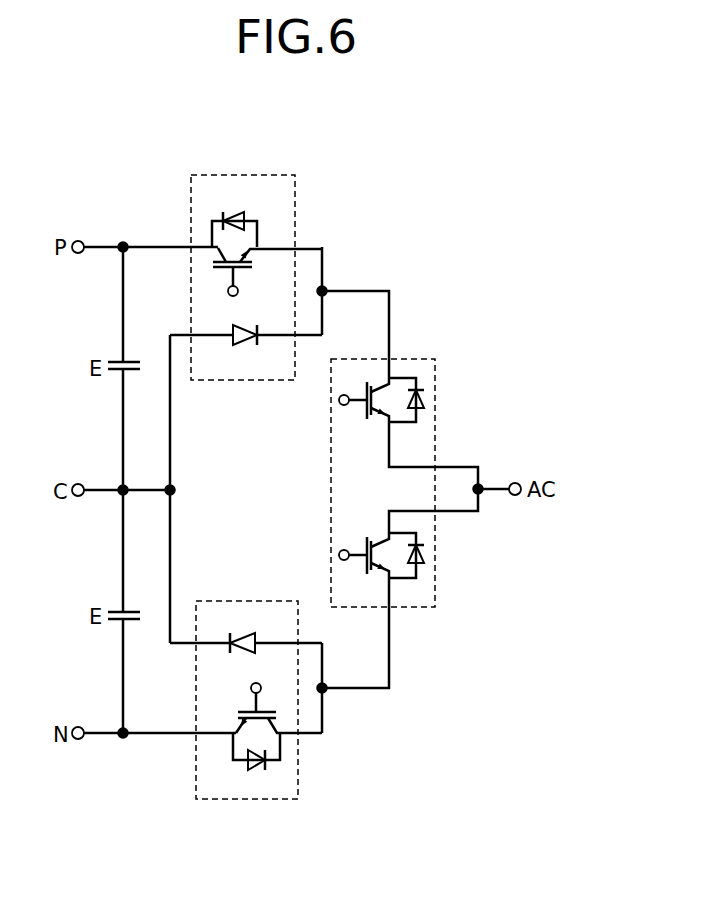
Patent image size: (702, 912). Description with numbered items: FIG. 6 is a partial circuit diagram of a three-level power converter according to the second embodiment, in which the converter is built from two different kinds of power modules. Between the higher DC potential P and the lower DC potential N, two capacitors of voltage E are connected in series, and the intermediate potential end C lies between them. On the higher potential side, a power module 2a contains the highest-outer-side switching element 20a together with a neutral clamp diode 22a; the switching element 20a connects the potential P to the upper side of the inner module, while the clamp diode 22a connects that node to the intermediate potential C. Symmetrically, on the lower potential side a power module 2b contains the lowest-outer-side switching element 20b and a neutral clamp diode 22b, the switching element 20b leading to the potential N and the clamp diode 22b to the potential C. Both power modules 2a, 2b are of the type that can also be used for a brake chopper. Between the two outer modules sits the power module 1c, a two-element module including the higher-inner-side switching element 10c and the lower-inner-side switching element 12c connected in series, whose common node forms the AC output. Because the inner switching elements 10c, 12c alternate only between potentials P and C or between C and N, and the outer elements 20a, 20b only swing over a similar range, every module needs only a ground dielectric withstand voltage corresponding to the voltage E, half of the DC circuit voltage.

The power module 2a is at (248, 174).
The highest-outer-side switching element 20a is at (267, 237).
The neutral clamp diode 22a is at (238, 358).
The power module 2b is at (248, 800).
The lowest-outer-side switching element 20b is at (276, 774).
The neutral clamp diode 22b is at (240, 626).
The power module 1c is at (419, 357).
The higher-inner-side switching element 10c is at (416, 433).
The lower-inner-side switching element 12c is at (416, 588).